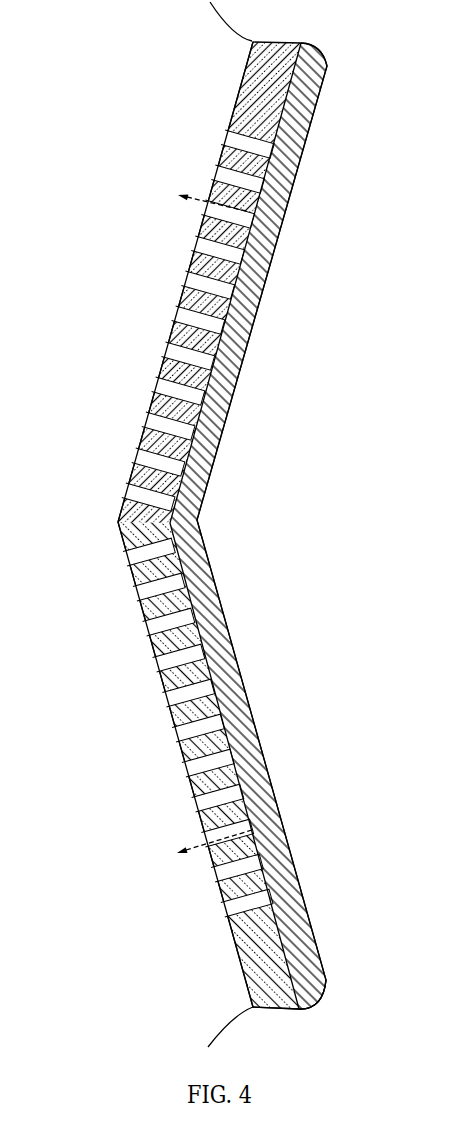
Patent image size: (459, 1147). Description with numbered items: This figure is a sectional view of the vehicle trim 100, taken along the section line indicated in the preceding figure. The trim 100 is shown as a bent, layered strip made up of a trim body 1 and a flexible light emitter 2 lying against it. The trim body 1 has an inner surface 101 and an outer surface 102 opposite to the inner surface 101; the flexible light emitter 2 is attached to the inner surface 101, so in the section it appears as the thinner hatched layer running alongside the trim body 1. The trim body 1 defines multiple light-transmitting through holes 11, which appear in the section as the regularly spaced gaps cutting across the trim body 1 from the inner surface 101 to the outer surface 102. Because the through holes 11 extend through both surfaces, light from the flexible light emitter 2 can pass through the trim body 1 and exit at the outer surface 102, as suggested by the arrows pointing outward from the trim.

The trim 100 is at (138, 53).
The trim body 1 is at (118, 522).
The light-transmitting through holes 11 is at (182, 271).
The flexible light emitter 2 is at (223, 390).
The inner surface 101 is at (292, 965).
The outer surface 102 is at (247, 977).